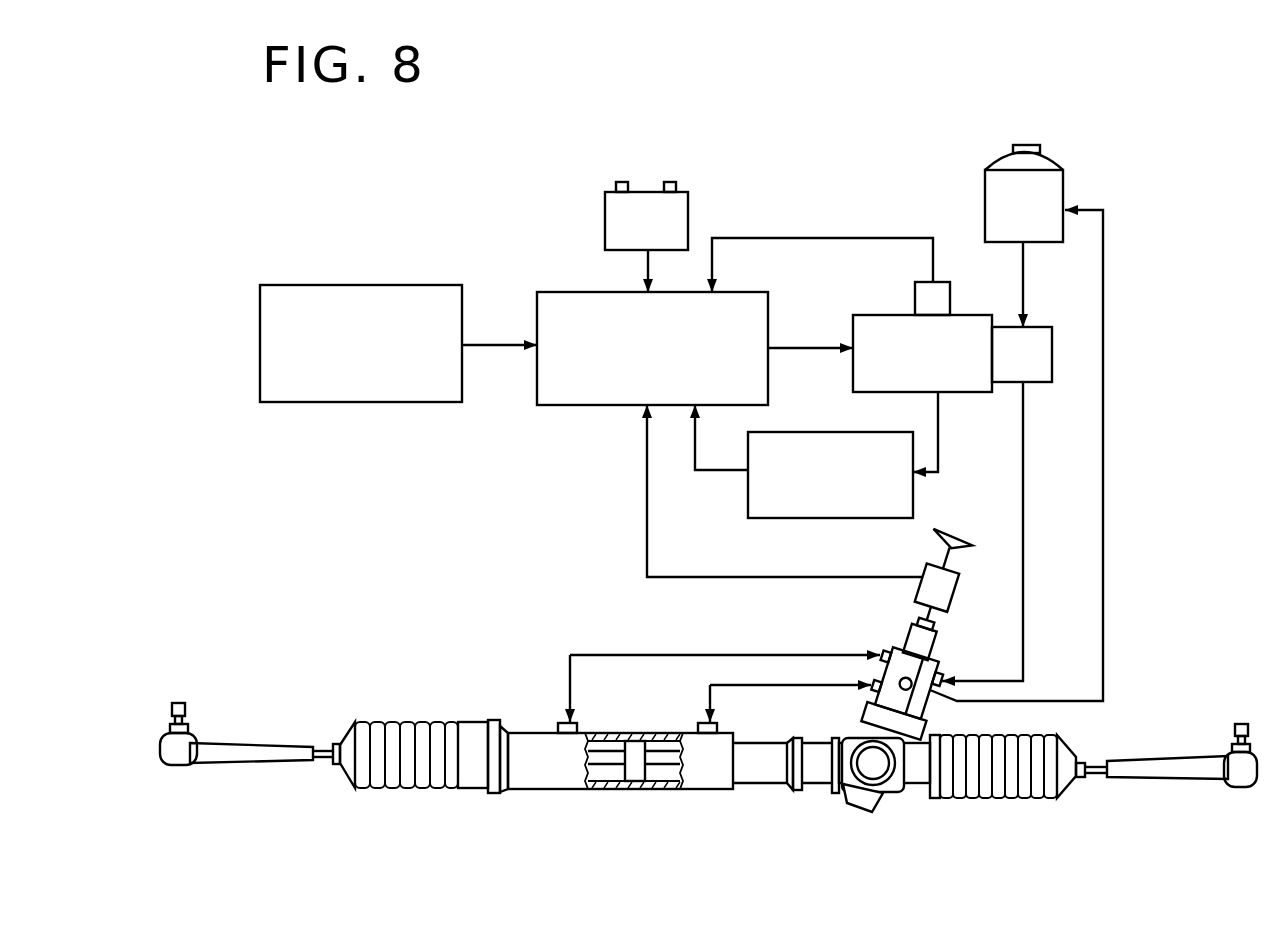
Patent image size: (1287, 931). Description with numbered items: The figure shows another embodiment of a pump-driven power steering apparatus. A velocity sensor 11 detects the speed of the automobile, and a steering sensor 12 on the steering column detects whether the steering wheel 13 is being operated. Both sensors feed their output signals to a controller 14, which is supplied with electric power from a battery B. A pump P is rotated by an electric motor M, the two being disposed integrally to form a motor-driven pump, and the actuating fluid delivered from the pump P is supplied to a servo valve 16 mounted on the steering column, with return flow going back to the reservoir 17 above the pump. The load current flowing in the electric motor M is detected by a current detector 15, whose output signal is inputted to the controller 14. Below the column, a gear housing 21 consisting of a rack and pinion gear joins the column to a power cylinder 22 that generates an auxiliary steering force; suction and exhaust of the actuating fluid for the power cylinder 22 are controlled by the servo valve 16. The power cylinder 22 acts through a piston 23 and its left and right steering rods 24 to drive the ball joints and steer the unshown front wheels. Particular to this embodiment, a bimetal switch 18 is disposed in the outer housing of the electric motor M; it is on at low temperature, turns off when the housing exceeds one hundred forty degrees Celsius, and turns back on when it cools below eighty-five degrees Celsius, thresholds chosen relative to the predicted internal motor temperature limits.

The velocity sensor 11 is at (262, 285).
The steering sensor 12 is at (955, 590).
The steering wheel 13 is at (958, 530).
The controller 14 is at (539, 292).
The current detector 15 is at (748, 518).
The servo valve 16 is at (935, 643).
The reservoir tank 17 is at (1063, 168).
The bimetal switch 18 is at (950, 286).
The gear housing 21 is at (882, 792).
The power cylinder 22 is at (552, 770).
The piston 23 is at (635, 770).
The steering rods 24 is at (668, 770).
The battery B is at (688, 193).
The electric motor M is at (855, 315).
The pump P is at (1052, 327).